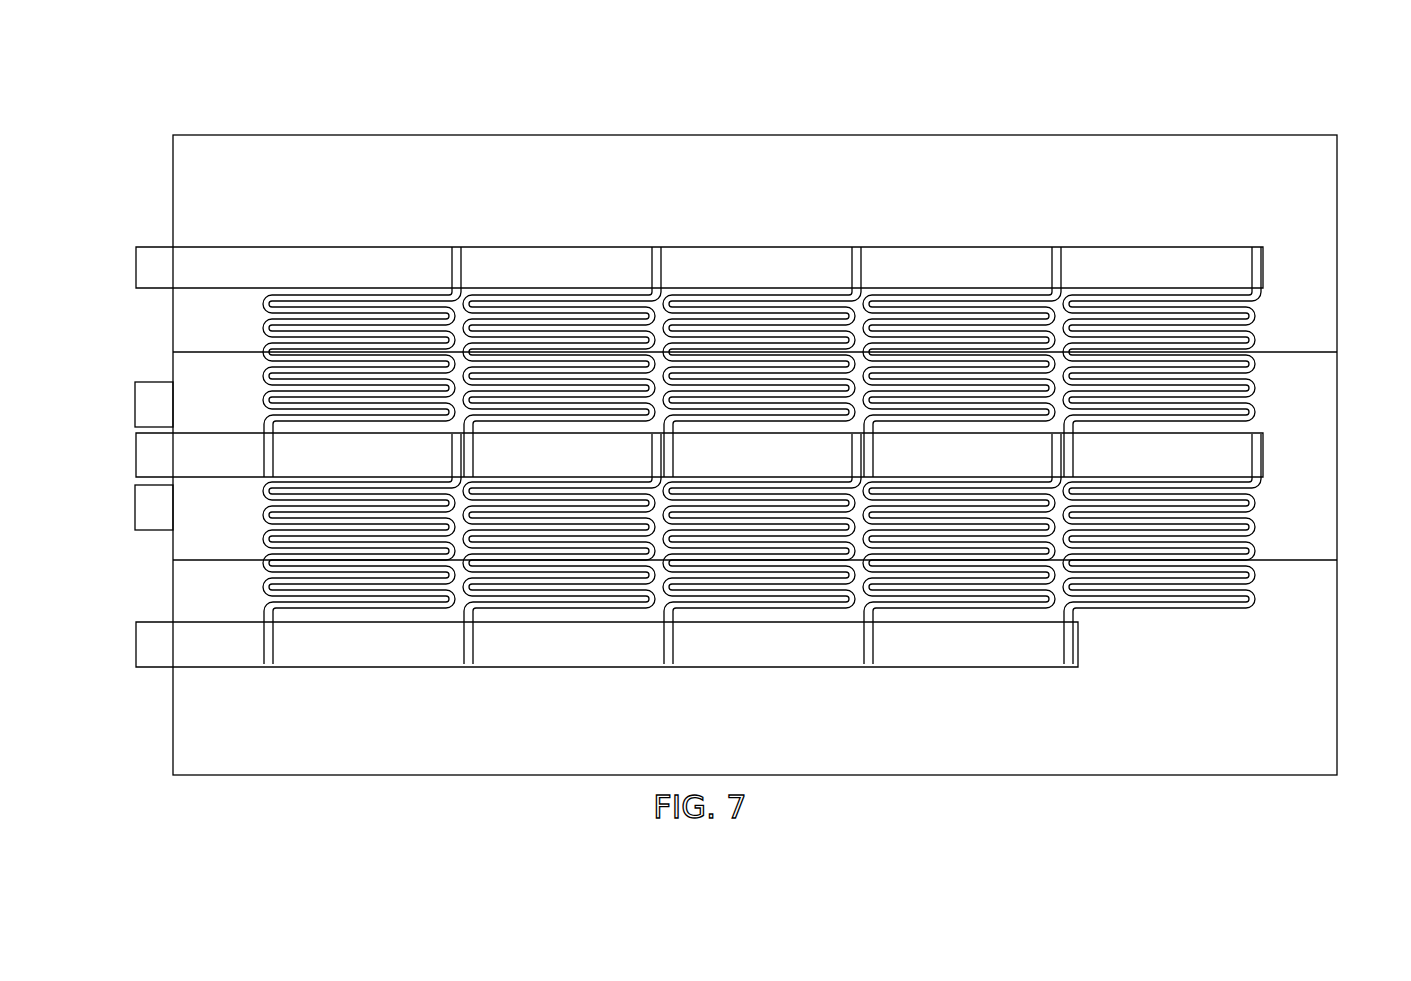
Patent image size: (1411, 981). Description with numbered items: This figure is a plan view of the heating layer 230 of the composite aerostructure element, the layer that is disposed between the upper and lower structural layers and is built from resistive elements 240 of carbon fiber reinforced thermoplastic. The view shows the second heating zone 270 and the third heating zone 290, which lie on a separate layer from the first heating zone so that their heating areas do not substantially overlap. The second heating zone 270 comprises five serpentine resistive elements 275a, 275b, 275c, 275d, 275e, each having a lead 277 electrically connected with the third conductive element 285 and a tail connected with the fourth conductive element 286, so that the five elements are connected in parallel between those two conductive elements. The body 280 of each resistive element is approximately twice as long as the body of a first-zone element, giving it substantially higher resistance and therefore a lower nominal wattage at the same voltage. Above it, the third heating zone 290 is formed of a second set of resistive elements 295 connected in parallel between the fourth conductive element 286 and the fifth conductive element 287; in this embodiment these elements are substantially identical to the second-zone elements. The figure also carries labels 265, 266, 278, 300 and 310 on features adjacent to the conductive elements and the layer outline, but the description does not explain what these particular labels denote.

The heating layer 230 is at (1198, 106).
The resistive element 240 is at (745, 237).
The lower port 265 is at (135, 518).
The upper port 266 is at (135, 400).
The second heating zone 270 is at (1231, 475).
The resistive element 275a is at (265, 412).
The resistive element 275b is at (532, 615).
The resistive element 275c is at (750, 615).
The resistive element 275d is at (945, 615).
The resistive element 275e is at (1150, 615).
The lead 277 is at (270, 645).
The intermediate manifold 278 is at (450, 446).
The body 280 is at (262, 597).
The third conductive element 285 is at (138, 655).
The fourth conductive element 286 is at (135, 458).
The fifth conductive element 287 is at (138, 262).
The third heating zone 290 is at (735, 236).
The resistive element 295 is at (327, 292).
The divider plate 300 is at (190, 380).
The housing wall 310 is at (311, 173).